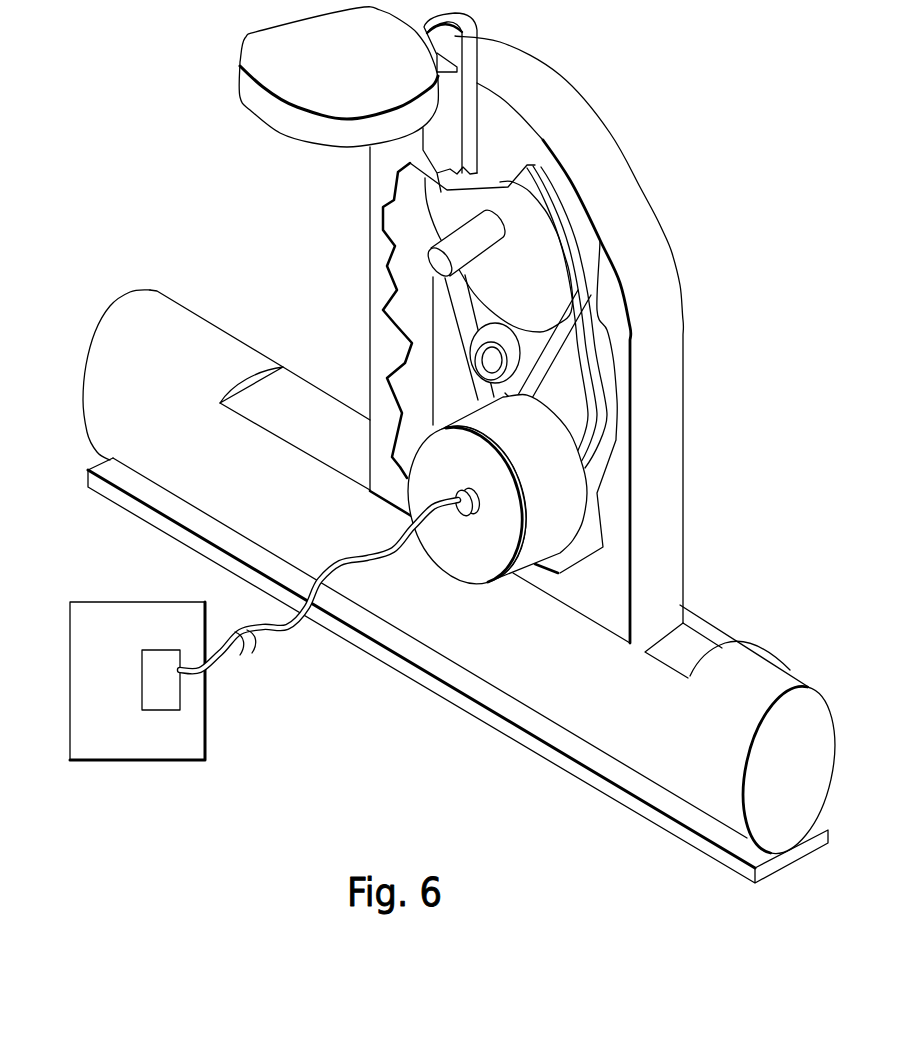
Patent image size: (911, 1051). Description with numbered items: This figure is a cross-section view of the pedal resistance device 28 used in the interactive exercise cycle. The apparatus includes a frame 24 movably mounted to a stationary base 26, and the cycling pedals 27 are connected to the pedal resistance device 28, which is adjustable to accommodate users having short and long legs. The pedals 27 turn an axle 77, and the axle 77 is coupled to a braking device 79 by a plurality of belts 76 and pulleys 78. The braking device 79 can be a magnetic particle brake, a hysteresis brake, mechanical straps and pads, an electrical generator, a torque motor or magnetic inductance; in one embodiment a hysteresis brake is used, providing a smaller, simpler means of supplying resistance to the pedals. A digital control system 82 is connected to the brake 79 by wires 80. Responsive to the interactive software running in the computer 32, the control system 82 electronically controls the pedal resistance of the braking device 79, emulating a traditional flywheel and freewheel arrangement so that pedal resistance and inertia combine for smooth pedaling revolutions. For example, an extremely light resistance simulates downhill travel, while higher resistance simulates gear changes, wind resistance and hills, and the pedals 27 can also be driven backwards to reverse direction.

The frame 24 is at (125, 328).
The stationary base 26 is at (580, 783).
The cycling pedals 27 is at (273, 93).
The pedal resistance device 28 is at (682, 558).
The computer 32 is at (70, 630).
The belts 76 is at (570, 183).
The axle 77 is at (440, 262).
The pulleys 78 is at (543, 242).
The braking device 79 is at (463, 577).
The wires 80 is at (263, 627).
The digital control system 82 is at (142, 683).